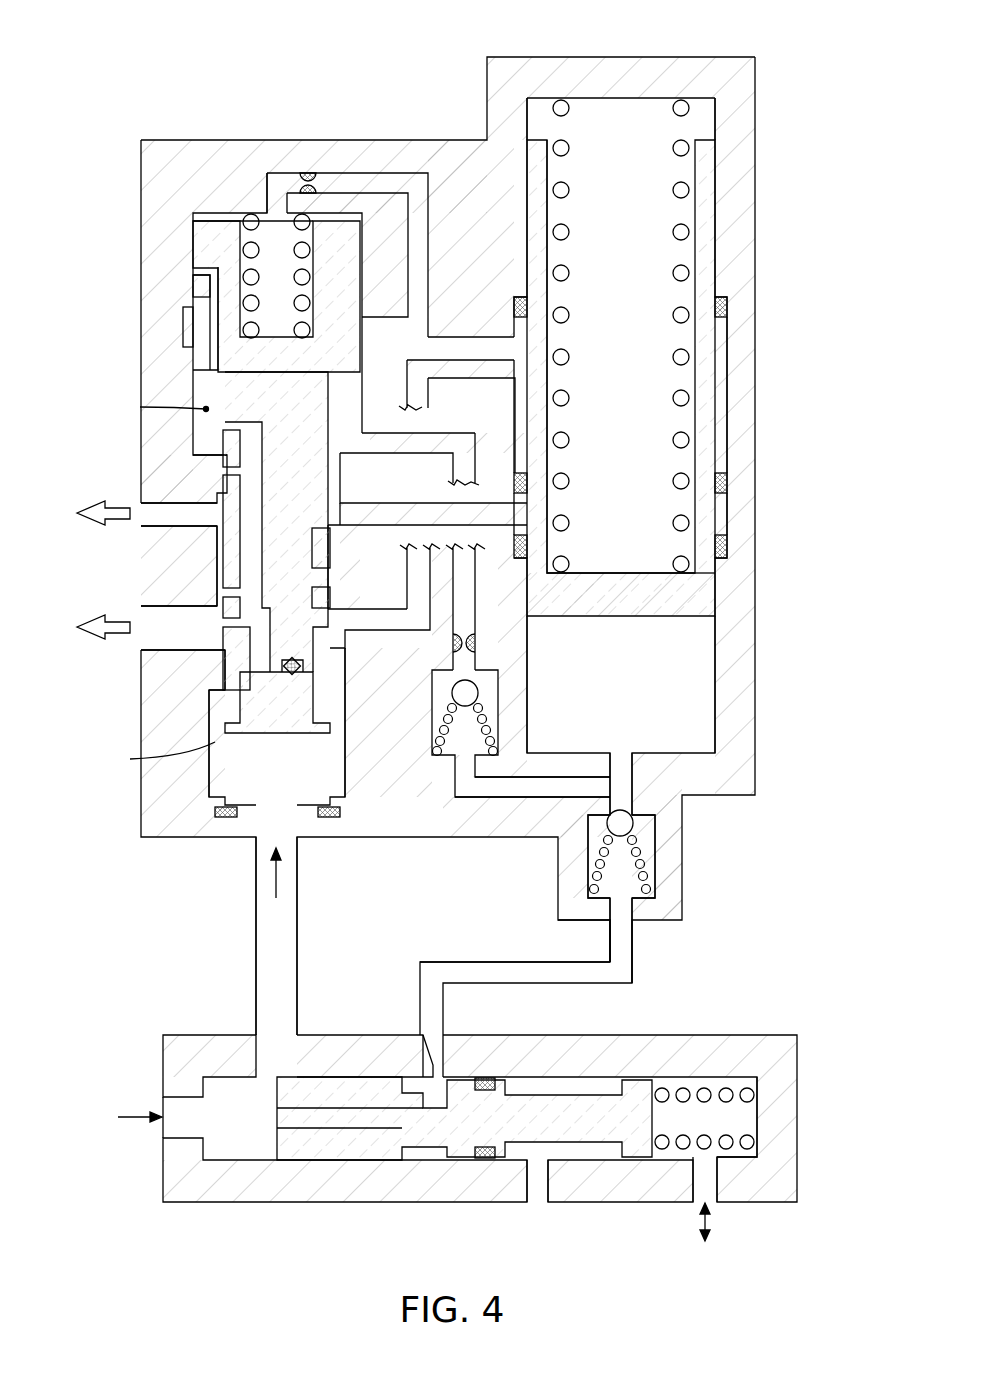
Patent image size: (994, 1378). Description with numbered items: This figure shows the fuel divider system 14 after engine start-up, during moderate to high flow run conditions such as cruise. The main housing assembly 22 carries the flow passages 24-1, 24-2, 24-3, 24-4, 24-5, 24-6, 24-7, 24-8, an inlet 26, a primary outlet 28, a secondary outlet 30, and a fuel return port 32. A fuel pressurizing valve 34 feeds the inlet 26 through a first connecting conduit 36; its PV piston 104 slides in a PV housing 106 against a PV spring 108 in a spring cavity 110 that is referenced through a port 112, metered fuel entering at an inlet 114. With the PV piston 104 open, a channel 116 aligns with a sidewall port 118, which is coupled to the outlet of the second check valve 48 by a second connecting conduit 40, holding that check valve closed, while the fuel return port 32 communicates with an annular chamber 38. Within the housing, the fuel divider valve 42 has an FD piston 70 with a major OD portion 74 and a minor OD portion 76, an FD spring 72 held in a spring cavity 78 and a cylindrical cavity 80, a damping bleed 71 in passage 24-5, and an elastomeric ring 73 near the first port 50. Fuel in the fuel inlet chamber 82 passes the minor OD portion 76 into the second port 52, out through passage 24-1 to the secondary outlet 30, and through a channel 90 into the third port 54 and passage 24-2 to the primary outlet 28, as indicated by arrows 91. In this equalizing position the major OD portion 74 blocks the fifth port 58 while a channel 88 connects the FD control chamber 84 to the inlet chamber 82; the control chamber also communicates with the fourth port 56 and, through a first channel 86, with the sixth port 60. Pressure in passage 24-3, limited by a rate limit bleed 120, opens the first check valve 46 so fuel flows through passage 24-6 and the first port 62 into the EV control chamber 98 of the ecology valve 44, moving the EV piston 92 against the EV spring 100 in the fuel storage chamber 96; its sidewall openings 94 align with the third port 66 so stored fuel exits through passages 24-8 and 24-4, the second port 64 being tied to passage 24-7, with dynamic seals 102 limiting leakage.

The fuel divider system 14 is at (162, 68).
The main housing assembly 22 is at (409, 824).
The flow passage 24-1 is at (179, 632).
The flow passage 24-2 is at (180, 520).
The flow passage 24-3 is at (463, 433).
The flow passage 24-4 is at (394, 622).
The flow passage 24-5 is at (433, 205).
The flow passage 24-6 is at (500, 788).
The flow passage 24-7 is at (446, 500).
The flow passage 24-8 is at (460, 354).
The inlet 26 is at (256, 858).
The primary outlet 28 is at (141, 532).
The secondary outlet 30 is at (141, 656).
The fuel return port 32 is at (624, 916).
The fuel pressurizing valve 34 is at (180, 1210).
The first connecting conduit 36 is at (262, 1021).
The annular chamber 38 is at (574, 1154).
The second connecting conduit 40 is at (506, 964).
The fuel divider valve 42 is at (183, 361).
The ecology valve 44 is at (652, 82).
The first check valve 46 is at (436, 718).
The second check valve 48 is at (665, 851).
The first port 50 is at (278, 808).
The second port 52 is at (343, 655).
The third port 54 is at (344, 498).
The fourth port 56 is at (373, 433).
The fifth port 58 is at (186, 319).
The sixth port 60 is at (262, 208).
The first port 62 is at (626, 764).
The second port 64 is at (729, 516).
The third port 66 is at (729, 393).
The FD piston 70 is at (221, 599).
The damping bleed 71 is at (300, 170).
The FD spring 72 is at (295, 282).
The elastomeric ring 73 is at (212, 821).
The major outer diameter portion 74 is at (262, 369).
The minor outer diameter portion 76 is at (282, 479).
The spring cavity 78 is at (192, 216).
The cylindrical cavity 80 is at (265, 315).
The fuel inlet chamber 82 is at (346, 766).
The FD control chamber 84 is at (191, 451).
The first channel 86 is at (194, 291).
The channel 88 is at (229, 712).
The channel 90 is at (331, 540).
The arrows 91 is at (93, 503).
The EV piston 92 is at (718, 574).
The sidewall openings 94 is at (545, 378).
The fuel storage chamber 96 is at (608, 204).
The EV control chamber 98 is at (606, 690).
The EV spring 100 is at (569, 146).
The dynamic seals 102 is at (729, 306).
The PV piston 104 is at (302, 1160).
The PV housing 106 is at (598, 1047).
The PV spring 108 is at (705, 1086).
The spring cavity 110 is at (742, 1113).
The port 112 is at (719, 1202).
The inlet 114 is at (165, 1096).
The channel 116 is at (352, 1128).
The sidewall port 118 is at (440, 1046).
The rate limit bleed 120 is at (472, 644).